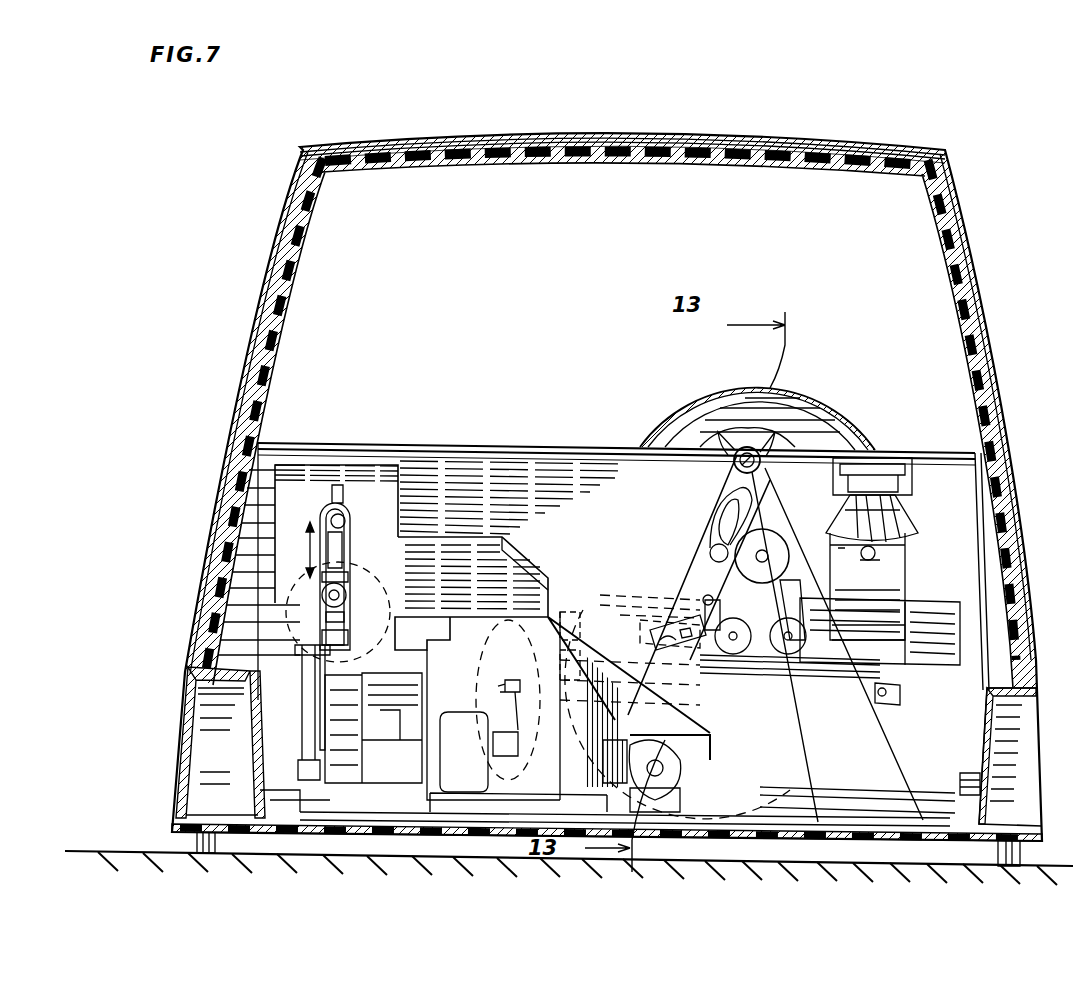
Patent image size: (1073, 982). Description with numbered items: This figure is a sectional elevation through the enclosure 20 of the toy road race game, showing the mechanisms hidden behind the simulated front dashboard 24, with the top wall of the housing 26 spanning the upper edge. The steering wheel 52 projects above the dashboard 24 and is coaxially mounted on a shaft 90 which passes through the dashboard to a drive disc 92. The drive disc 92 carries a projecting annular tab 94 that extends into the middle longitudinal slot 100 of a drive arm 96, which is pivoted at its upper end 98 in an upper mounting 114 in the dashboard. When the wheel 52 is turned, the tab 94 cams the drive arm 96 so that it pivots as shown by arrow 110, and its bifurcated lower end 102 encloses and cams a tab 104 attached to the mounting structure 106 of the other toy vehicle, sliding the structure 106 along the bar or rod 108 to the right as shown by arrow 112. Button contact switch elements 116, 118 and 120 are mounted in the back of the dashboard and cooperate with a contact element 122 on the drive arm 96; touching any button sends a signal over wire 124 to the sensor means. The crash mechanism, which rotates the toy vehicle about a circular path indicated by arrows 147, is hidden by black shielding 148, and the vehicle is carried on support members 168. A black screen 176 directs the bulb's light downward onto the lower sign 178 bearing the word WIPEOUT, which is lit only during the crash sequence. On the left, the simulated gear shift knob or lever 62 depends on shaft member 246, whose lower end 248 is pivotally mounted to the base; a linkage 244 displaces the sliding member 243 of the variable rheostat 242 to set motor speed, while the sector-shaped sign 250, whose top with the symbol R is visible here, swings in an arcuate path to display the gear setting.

The enclosure 20 is at (1003, 536).
The front dashboard 24 is at (545, 443).
The top wall 26 is at (832, 162).
The steering wheel 52 is at (808, 418).
The simulated gear shift knob or lever 62 is at (386, 568).
The shaft 90 is at (762, 563).
The drive disc 92 is at (770, 526).
The projecting annular tab 94 is at (708, 553).
The drive arm 96 is at (695, 574).
The upper end / upper pivot mounting 98 is at (720, 442).
The middle longitudinal slot 100 is at (714, 514).
The lower other end 102 is at (700, 742).
The tab 104 is at (688, 838).
The mounting structure 106 is at (625, 771).
The bar or rod 108 is at (878, 800).
The arrow 110 is at (830, 716).
The arrow 112 is at (590, 760).
The upper mounting of the pivot 114 is at (745, 440).
The button contact switch element 116 is at (790, 646).
The button contact switch element 118 is at (786, 612).
The button contact switch element 120 is at (842, 616).
The contact element 122 is at (700, 598).
The wire 124 is at (712, 534).
The arrows 147 is at (482, 645).
The black colored panel or shielding 148 is at (462, 620).
The support members 168 is at (480, 736).
The screen 176 is at (912, 512).
The lower sign 178 is at (1000, 604).
The variable rheostat 242 is at (345, 508).
The sliding member 243 is at (340, 630).
The linkage 244 is at (302, 668).
The shaft member 246 is at (300, 735).
The lower end 248 is at (300, 775).
The sector-shaped sign 250 is at (373, 728).